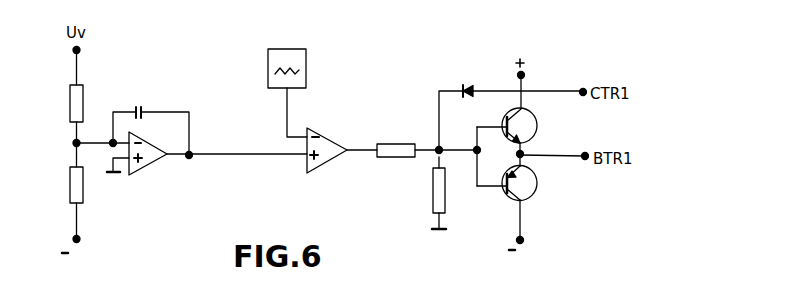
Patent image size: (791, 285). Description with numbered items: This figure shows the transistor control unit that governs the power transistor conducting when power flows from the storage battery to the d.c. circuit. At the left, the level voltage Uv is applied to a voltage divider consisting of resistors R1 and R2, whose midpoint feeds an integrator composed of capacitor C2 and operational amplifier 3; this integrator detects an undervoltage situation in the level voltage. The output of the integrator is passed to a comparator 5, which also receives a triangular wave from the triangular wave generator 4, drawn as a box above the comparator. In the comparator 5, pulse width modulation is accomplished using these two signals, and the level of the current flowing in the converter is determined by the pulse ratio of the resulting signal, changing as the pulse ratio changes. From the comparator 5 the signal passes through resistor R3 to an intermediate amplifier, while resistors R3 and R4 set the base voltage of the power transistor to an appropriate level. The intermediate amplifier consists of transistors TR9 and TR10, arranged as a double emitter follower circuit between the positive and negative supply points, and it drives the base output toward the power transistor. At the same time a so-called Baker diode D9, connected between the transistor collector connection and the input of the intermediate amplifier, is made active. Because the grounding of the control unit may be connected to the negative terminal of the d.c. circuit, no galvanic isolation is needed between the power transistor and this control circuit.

The operational amplifier 3 is at (158, 160).
The triangular wave generator 4 is at (288, 49).
The comparator 5 is at (336, 158).
The resistor R1 is at (61, 103).
The resistor R2 is at (61, 185).
The resistor R3 is at (396, 140).
The resistor R4 is at (427, 190).
The capacitor C2 is at (151, 118).
The Baker diode D9 is at (468, 78).
The transistor TR9 is at (524, 124).
The transistor TR10 is at (529, 184).